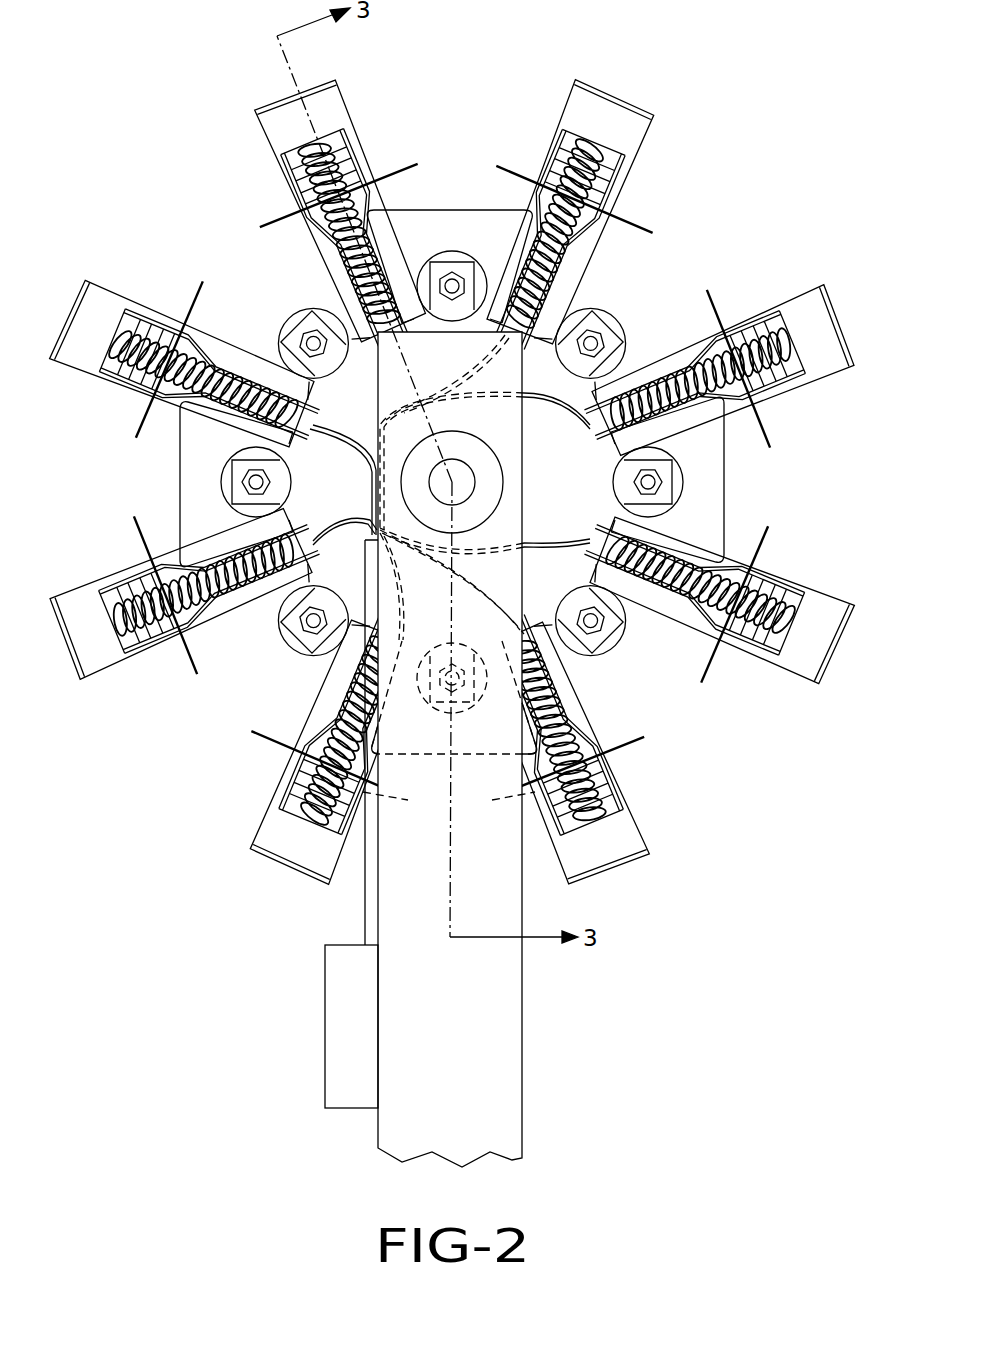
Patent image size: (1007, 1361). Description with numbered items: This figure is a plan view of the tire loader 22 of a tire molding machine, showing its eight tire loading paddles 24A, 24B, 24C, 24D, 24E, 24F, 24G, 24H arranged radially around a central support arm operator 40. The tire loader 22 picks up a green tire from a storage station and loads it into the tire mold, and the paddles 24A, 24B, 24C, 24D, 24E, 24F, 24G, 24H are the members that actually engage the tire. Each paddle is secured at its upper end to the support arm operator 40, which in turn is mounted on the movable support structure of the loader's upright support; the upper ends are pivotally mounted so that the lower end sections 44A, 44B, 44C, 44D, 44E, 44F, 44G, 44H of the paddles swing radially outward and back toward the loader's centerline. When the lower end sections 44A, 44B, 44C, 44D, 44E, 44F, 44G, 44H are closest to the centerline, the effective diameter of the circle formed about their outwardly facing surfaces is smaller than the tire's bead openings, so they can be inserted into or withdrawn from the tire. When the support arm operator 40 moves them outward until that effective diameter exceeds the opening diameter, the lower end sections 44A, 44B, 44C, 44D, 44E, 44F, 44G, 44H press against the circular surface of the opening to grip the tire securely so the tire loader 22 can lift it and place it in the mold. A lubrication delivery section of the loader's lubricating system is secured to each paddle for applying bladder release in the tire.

The tire loader 22 is at (437, 72).
The tire loading paddle 24A is at (822, 336).
The tire loading paddle 24B is at (822, 634).
The tire loading paddle 24C is at (612, 855).
The tire loading paddle 24D is at (298, 856).
The tire loading paddle 24E is at (78, 632).
The tire loading paddle 24F is at (78, 330).
The tire loading paddle 24G is at (298, 104).
The tire loading paddle 24H is at (615, 100).
The lower end section 44A is at (822, 338).
The lower end section 44B is at (818, 660).
The lower end section 44C is at (627, 845).
The lower end section 44D is at (284, 845).
The lower end section 44E is at (120, 665).
The lower end section 44F is at (120, 300).
The lower end section 44G is at (284, 112).
The lower end section 44H is at (627, 118).
The support arm operator 40 is at (543, 332).